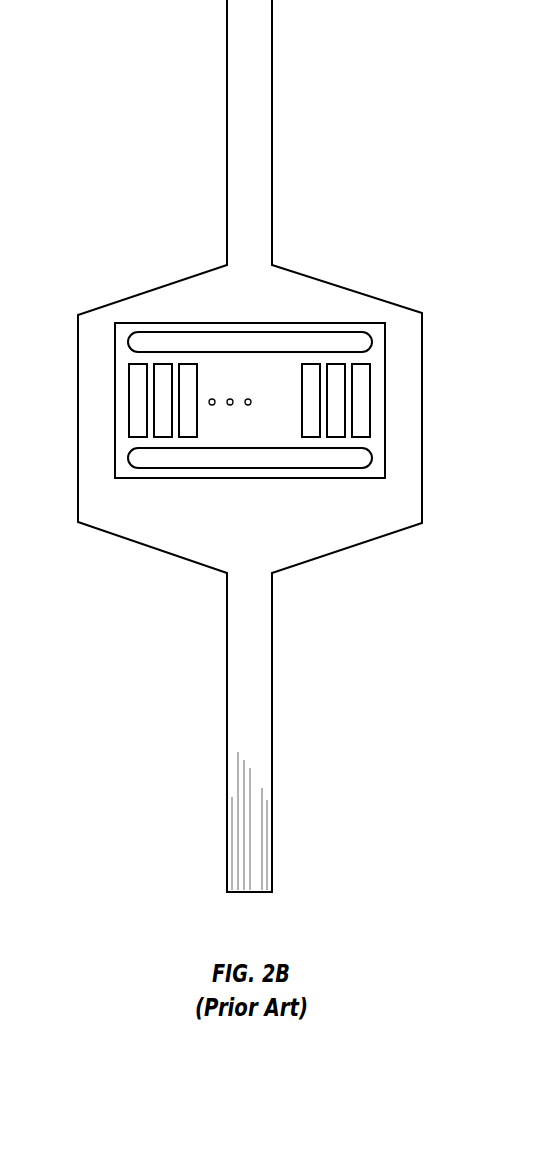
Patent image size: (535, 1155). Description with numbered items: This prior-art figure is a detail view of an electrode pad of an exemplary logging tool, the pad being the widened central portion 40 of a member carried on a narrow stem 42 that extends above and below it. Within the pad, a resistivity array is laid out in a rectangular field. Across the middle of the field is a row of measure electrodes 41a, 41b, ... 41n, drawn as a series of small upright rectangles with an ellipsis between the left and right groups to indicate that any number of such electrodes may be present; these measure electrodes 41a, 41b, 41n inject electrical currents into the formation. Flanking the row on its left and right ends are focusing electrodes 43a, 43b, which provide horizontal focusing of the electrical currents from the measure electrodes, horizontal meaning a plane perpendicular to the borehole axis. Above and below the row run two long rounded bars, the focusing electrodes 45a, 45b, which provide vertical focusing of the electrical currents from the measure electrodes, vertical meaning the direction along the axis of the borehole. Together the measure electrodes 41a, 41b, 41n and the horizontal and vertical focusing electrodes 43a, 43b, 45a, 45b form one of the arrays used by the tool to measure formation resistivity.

The prior art sensor device 40 is at (305, 277).
The lead / stem 42 is at (272, 151).
The measure electrode 41a is at (167, 382).
The measure electrode 41b is at (188, 422).
The measure electrode 41n is at (335, 382).
The focusing electrode 43a is at (138, 393).
The focusing electrode 43b is at (362, 400).
The focusing electrode 45a is at (203, 323).
The focusing electrode 45b is at (355, 462).